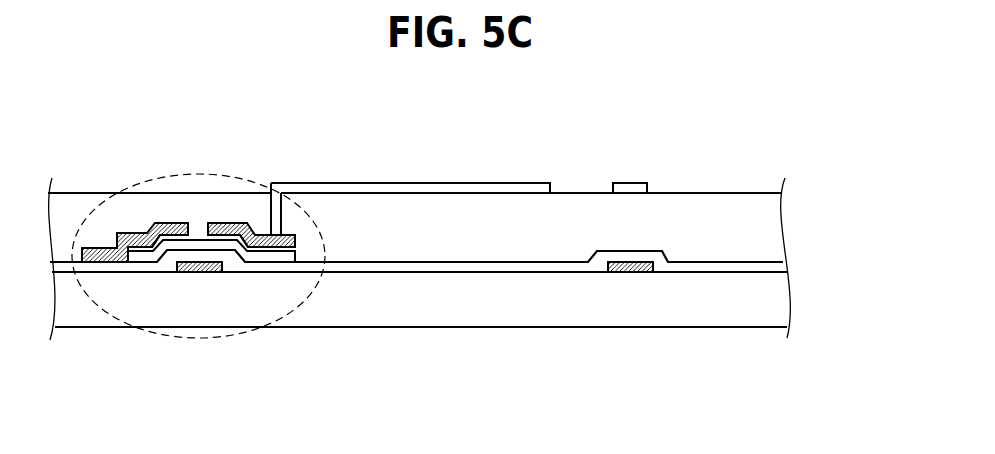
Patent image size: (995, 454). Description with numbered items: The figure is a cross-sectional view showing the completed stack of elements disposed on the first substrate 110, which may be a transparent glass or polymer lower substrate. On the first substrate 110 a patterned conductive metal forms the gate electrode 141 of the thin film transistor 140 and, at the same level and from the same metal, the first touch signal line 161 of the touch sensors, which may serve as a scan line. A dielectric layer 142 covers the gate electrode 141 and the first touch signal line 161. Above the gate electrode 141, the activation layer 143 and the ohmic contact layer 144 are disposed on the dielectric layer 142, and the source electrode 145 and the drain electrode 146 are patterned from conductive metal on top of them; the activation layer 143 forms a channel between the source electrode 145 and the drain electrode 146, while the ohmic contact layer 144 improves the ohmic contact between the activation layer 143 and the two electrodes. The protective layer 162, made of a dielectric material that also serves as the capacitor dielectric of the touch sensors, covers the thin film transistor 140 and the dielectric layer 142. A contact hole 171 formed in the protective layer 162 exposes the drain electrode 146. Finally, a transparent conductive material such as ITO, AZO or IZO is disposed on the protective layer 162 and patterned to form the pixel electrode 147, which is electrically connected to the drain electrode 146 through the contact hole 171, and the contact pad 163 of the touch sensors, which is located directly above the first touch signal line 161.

The first substrate 110 is at (782, 302).
The thin film transistor 140 is at (172, 176).
The gate electrode 141 is at (199, 273).
The dielectric layer 142 is at (412, 265).
The activation layer 143 is at (145, 257).
The ohmic contact layer 144 is at (137, 252).
The source electrode 145 is at (105, 258).
The drain electrode 146 is at (254, 245).
The pixel electrode 147 is at (435, 190).
The first touch signal line 161 is at (628, 273).
The protective layer 162 is at (770, 224).
The contact pad 163 is at (632, 190).
The contact hole 171 is at (279, 185).